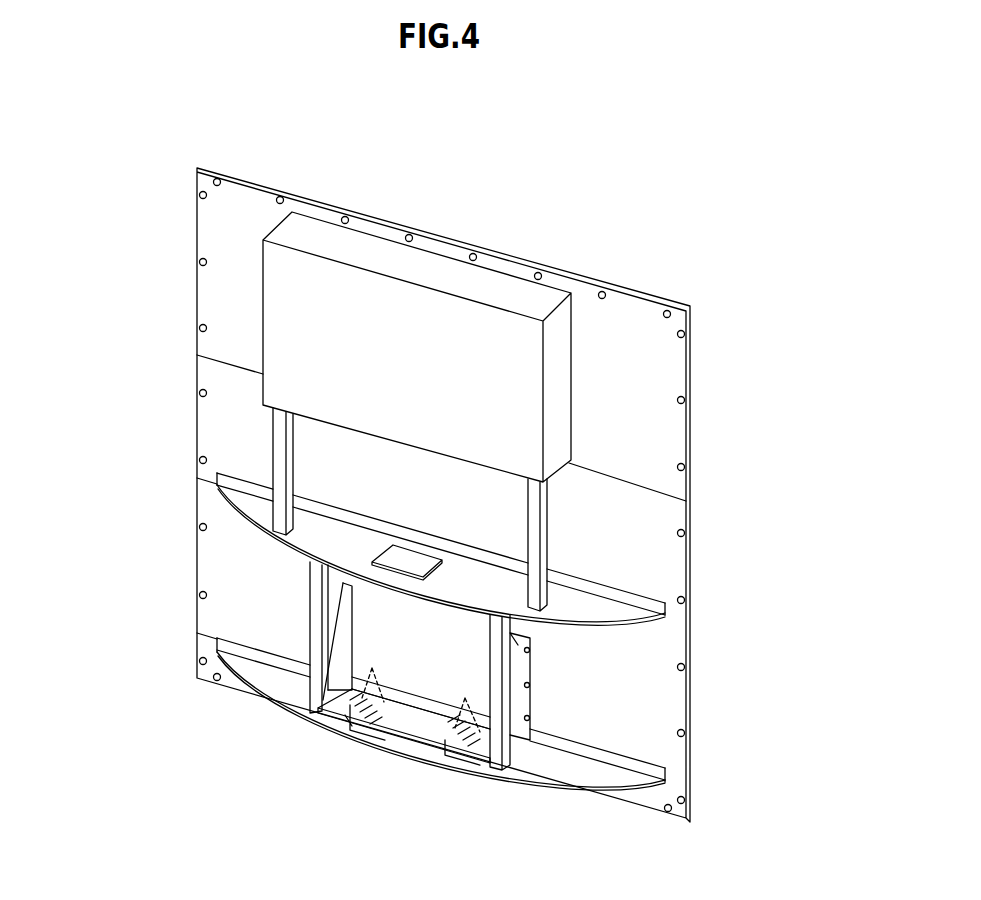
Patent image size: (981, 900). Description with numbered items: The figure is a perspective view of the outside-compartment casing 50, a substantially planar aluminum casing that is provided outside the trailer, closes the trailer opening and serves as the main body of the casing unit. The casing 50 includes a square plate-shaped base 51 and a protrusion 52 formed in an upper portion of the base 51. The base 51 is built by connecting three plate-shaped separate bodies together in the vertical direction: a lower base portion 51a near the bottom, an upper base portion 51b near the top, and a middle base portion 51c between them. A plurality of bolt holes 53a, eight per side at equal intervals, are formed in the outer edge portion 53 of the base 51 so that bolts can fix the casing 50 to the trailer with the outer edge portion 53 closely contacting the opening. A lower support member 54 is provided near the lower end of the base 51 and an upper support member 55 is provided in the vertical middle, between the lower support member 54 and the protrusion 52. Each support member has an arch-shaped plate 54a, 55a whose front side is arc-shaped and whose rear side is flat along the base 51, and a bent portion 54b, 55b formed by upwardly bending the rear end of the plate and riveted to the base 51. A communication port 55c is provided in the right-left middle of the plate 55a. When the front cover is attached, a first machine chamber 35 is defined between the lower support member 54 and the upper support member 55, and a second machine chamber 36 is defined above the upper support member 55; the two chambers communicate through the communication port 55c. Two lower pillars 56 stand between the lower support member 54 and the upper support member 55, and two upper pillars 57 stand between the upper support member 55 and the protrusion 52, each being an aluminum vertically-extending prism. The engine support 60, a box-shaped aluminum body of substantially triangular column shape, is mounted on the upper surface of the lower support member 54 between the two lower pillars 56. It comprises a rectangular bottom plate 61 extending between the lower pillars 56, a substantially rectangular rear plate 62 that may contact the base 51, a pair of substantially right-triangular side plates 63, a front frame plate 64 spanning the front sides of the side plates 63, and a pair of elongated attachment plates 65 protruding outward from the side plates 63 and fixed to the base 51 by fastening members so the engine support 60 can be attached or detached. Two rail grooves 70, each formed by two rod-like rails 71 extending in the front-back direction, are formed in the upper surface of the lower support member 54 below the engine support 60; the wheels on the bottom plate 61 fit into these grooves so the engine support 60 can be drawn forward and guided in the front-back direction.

The outside-compartment casing 50 is at (626, 194).
The base 51 is at (197, 226).
The lower base portion 51a is at (197, 555).
The upper base portion 51b is at (197, 292).
The middle base portion 51c is at (197, 450).
The protrusion 52 is at (400, 312).
The outer edge portion 53 is at (197, 413).
The bolt holes 53a is at (197, 378).
The lower support member 54 is at (441, 745).
The arch-shaped plate 54a is at (542, 768).
The bent portion 54b is at (602, 752).
The upper support member 55 is at (441, 578).
The arch-shaped plate 55a is at (588, 604).
The bent portion 55b is at (462, 546).
The communication port 55c is at (410, 560).
The lower pillars 56 is at (312, 599).
The upper pillars 57 is at (275, 437).
The engine support 60 is at (375, 765).
The bottom plate 61 is at (472, 770).
The rear plate 62 is at (373, 622).
The side plates 63 is at (330, 690).
The front frame plate 64 is at (325, 720).
The attachment plates 65 is at (338, 585).
The rail grooves 70 is at (443, 772).
The rails 71 is at (419, 686).
The first machine chamber 35 is at (380, 738).
The second machine chamber 36 is at (505, 535).